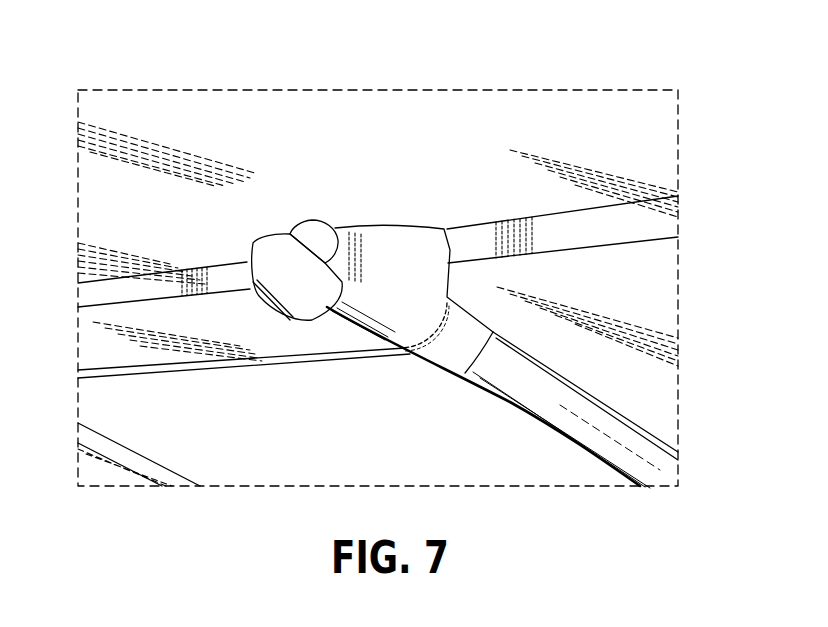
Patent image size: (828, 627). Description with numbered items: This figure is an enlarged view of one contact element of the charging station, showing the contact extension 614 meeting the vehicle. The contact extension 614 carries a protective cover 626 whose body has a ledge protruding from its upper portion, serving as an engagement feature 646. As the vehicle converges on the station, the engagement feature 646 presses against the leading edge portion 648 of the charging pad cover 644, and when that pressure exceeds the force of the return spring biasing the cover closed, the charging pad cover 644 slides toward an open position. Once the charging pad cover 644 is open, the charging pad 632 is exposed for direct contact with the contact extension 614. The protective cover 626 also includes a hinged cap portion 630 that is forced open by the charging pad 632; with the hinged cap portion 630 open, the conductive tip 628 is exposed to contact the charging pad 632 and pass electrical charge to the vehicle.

The contact extension 614 is at (533, 416).
The protective cover 626 is at (398, 312).
The conductive tip 628 is at (303, 227).
The hinged cap portion 630 is at (296, 290).
The charging pad 632 is at (297, 113).
The charging pad cover 644 is at (655, 280).
The engagement feature 646 is at (453, 249).
The leading edge portion 648 is at (640, 227).